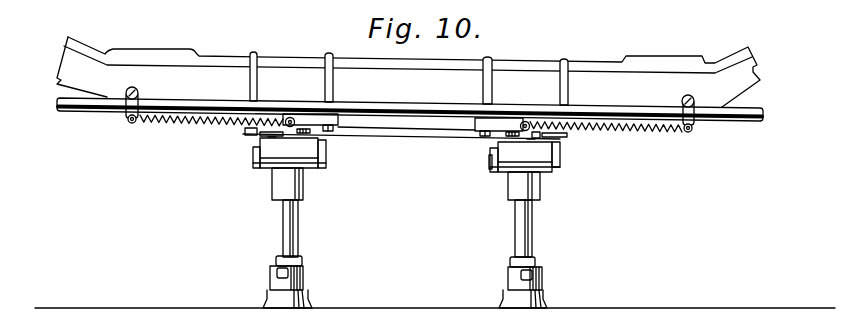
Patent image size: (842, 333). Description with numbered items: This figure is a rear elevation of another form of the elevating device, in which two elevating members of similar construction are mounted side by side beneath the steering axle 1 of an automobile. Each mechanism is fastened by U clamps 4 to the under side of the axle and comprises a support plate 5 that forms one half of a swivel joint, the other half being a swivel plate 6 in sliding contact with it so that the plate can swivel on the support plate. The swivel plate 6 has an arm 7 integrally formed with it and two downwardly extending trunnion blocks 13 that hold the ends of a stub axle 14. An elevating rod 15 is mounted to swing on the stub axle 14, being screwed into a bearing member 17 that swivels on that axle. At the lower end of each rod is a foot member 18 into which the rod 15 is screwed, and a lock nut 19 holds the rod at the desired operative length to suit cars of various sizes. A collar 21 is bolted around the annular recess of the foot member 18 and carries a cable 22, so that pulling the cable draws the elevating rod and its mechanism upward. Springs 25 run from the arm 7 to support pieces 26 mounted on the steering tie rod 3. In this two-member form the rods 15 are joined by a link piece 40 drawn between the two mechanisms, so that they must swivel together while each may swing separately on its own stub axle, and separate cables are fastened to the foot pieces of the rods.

The steering axle 1 is at (642, 64).
The steering tie rod 3 is at (197, 102).
The U clamps 4 is at (325, 75).
The support plate 5 is at (343, 123).
The swivel plate 6 is at (250, 134).
The arm 7 is at (272, 136).
The trunnion blocks 13 is at (268, 169).
The stub axle 14 is at (490, 162).
The elevating rod 15 is at (299, 220).
The bearing member 17 is at (304, 183).
The foot member 18 is at (308, 304).
The lock nut 19 is at (276, 261).
The collar 21 is at (306, 286).
The cable 22 is at (278, 275).
The springs 25 is at (195, 127).
The support pieces 26 is at (127, 118).
The plate 40 is at (412, 141).